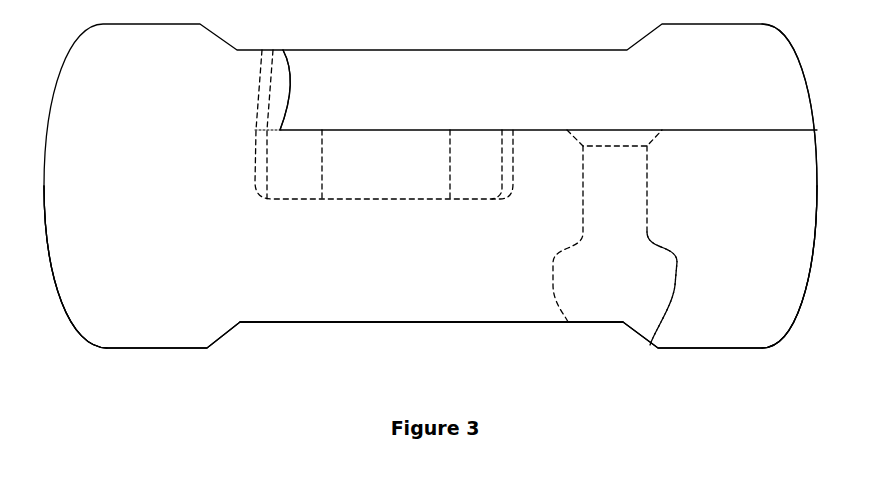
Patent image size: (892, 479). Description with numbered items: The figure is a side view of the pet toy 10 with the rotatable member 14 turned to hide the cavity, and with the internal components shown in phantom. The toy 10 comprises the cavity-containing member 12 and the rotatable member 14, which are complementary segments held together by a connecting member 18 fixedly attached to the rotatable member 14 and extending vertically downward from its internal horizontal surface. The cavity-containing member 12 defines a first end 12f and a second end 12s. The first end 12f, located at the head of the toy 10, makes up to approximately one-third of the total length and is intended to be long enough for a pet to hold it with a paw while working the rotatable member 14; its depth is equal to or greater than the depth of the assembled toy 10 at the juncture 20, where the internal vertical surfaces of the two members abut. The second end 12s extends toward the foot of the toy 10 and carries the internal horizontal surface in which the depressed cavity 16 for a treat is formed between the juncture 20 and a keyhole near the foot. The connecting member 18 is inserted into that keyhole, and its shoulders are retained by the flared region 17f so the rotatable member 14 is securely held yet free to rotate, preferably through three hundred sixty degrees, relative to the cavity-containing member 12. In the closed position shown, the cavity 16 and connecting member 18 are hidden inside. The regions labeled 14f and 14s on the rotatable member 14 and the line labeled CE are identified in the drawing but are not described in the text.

The toy 10 is at (498, 42).
The cavity-containing member 12 is at (430, 267).
The first end 12f is at (80, 250).
The second end 12s is at (782, 250).
The rotatable member 14 is at (549, 106).
The front end of upper body portion 14f is at (293, 90).
The rear end of upper body portion 14s is at (782, 105).
The cavity 16 is at (384, 124).
The flared region 17f is at (670, 285).
The connecting member 18 is at (615, 237).
The juncture 20 is at (292, 72).
The center edge line CE is at (298, 324).